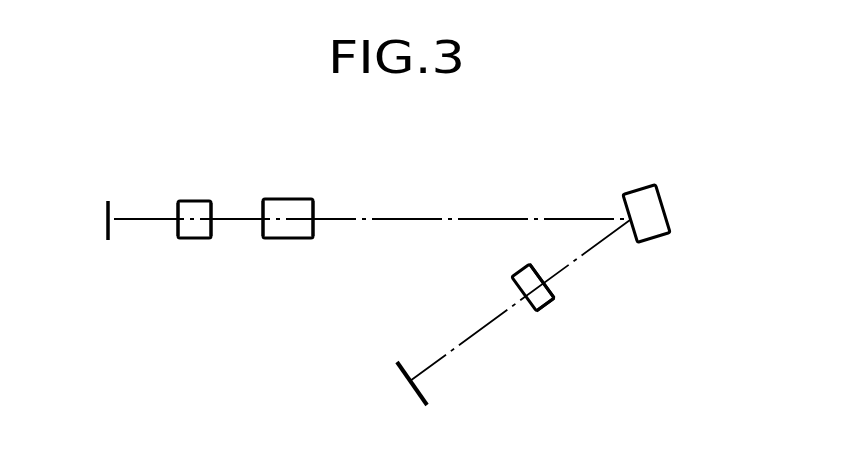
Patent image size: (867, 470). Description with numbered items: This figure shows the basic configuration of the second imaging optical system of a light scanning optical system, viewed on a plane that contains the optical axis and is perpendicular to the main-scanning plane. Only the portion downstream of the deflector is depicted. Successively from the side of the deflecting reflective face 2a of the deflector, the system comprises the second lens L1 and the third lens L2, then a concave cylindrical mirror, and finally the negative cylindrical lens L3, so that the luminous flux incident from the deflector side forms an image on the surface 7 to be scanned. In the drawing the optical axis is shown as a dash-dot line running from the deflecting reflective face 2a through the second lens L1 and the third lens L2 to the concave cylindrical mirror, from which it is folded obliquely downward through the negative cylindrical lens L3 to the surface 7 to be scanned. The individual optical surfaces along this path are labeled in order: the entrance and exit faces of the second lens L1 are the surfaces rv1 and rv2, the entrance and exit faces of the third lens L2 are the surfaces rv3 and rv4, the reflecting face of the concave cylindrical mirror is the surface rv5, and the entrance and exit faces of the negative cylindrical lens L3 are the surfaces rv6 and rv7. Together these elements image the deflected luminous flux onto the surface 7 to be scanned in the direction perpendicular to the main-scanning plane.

The deflecting reflective face 2a is at (105, 234).
The surface to be scanned 7 is at (425, 390).
The second lens L1 is at (189, 205).
The third lens L2 is at (285, 203).
The negative cylindrical lens L3 is at (521, 268).
The first lens surface rv1 is at (178, 213).
The second lens surface rv2 is at (211, 213).
The third lens surface rv3 is at (263, 231).
The fourth lens surface rv4 is at (313, 227).
The mirror reflecting surface rv5 is at (634, 235).
The sixth lens surface rv6 is at (552, 295).
The seventh lens surface rv7 is at (541, 312).